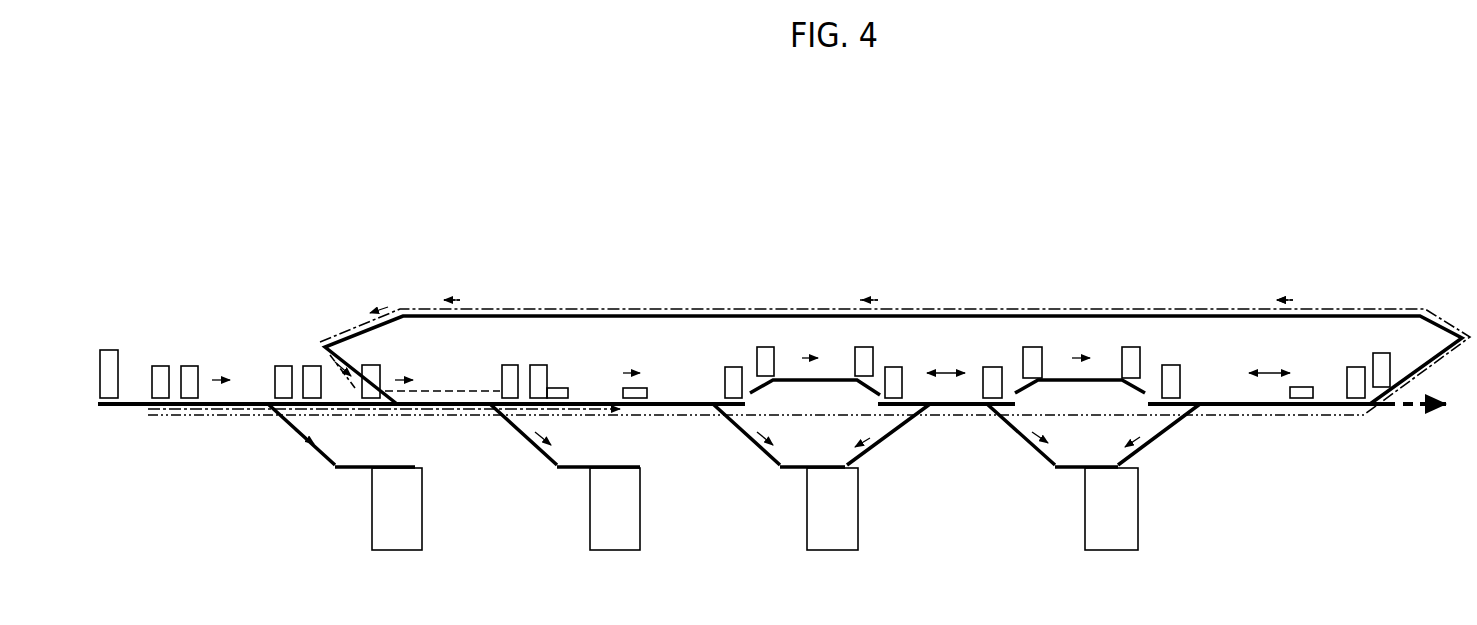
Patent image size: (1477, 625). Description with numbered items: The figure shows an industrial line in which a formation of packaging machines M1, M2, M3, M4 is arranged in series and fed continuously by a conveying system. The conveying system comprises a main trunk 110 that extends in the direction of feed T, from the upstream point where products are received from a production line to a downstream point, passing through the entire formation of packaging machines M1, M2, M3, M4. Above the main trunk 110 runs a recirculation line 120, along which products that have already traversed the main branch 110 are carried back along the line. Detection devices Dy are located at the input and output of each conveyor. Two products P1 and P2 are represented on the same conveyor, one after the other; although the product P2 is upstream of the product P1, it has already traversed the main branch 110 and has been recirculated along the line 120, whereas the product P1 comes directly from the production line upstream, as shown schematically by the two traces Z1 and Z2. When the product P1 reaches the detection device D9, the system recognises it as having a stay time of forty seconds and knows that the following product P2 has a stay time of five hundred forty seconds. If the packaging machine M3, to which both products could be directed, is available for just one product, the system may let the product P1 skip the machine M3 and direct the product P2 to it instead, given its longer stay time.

The main trunk 110 is at (128, 407).
The recirculation line 120 is at (944, 323).
The detection devices Dy is at (190, 365).
The trace of first product Z1 is at (597, 411).
The trace of second product Z2 is at (457, 390).
The first product P1 is at (647, 389).
The second product P2 is at (563, 388).
The detection device D9 is at (737, 366).
The packaging machine M1 is at (345, 477).
The packaging machine M2 is at (565, 477).
The packaging machine M3 is at (821, 477).
The packaging machine M4 is at (1093, 477).
The direction of feed T is at (1433, 427).